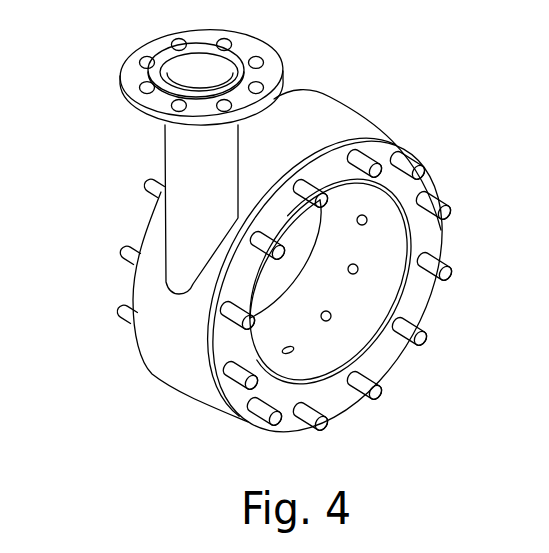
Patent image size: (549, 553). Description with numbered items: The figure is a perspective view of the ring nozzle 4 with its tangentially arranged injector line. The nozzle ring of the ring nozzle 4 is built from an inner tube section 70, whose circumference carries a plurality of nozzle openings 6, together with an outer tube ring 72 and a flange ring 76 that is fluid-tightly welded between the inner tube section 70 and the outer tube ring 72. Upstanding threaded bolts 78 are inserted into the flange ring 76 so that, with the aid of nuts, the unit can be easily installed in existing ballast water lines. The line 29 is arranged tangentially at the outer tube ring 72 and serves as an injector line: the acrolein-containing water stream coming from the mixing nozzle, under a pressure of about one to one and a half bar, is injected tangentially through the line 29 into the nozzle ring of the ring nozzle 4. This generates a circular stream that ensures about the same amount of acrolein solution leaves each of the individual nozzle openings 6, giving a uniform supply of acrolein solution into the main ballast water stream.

The ring nozzle 4 is at (166, 406).
The nozzle openings 6 is at (332, 317).
The line 29 is at (177, 150).
The inner tube section 70 is at (378, 270).
The outer tube ring 72 is at (327, 112).
The flange ring 76 is at (333, 397).
The upstanding bolts 78 is at (122, 247).